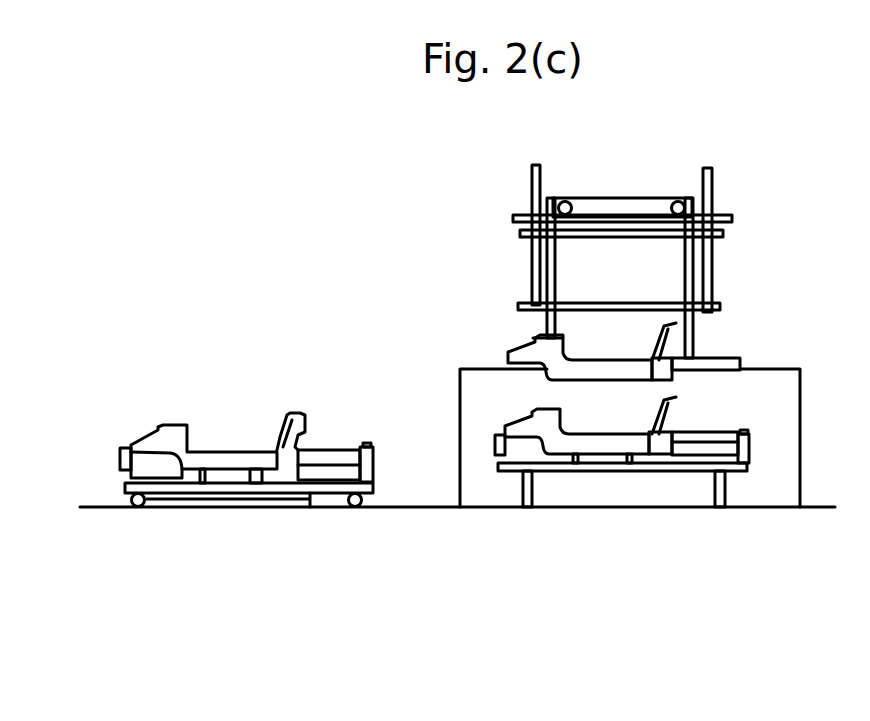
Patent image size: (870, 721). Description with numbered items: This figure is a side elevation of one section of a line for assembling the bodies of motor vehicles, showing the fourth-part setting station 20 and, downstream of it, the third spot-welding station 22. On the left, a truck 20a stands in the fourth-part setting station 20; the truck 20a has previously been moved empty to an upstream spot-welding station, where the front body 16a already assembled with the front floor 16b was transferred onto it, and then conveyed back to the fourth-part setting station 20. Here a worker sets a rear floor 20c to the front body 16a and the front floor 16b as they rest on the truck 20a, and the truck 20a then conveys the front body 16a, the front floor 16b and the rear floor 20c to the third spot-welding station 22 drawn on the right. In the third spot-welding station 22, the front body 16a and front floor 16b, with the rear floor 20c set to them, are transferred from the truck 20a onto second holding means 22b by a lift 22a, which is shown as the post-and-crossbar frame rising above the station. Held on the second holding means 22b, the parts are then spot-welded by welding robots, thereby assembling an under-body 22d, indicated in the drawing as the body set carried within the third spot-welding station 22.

The front body 16a is at (177, 424).
The front floor 16b is at (243, 452).
The fourth-part setting station 20 is at (215, 517).
The truck 20a is at (310, 508).
The rear floor 20c is at (345, 450).
The third spot-welding station 22 is at (523, 530).
The lift 22a is at (712, 192).
The second holding means 22b is at (632, 472).
The under-body 22d is at (727, 423).